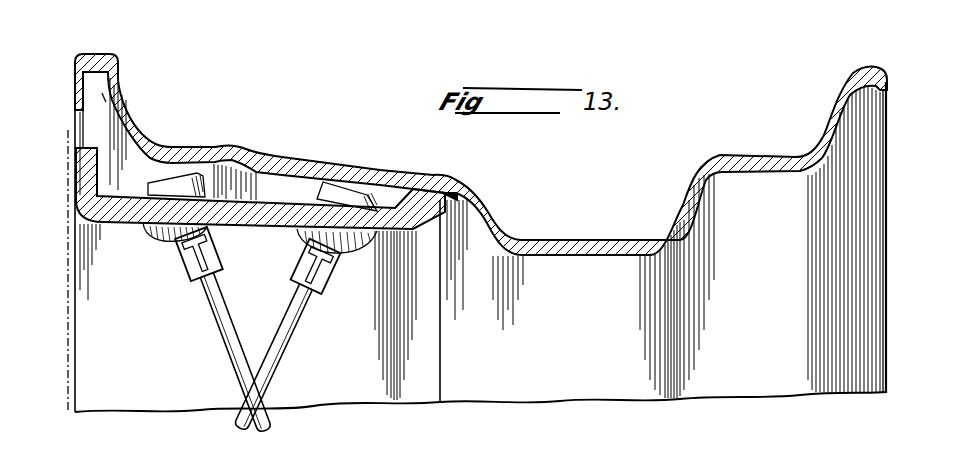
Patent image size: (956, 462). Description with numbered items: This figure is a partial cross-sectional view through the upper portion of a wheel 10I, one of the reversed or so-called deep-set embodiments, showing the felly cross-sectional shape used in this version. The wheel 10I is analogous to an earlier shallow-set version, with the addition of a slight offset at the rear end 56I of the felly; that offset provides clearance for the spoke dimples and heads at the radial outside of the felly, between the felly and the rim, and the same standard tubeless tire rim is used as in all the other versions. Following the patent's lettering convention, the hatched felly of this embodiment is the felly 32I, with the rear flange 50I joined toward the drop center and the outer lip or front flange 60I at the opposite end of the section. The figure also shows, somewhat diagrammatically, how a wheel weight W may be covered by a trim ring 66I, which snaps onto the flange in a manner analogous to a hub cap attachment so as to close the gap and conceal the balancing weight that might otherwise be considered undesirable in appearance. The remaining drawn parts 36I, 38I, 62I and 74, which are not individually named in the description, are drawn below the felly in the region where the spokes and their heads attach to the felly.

The wheel 10I is at (227, 132).
The trim ring 66I is at (68, 130).
The wheel weight W is at (123, 63).
The bead retaining block 60I is at (78, 173).
The lock ring insert 32I is at (267, 199).
The rear end 56I is at (388, 197).
The drop center well 50I is at (426, 195).
The rivet head 74 is at (264, 233).
The rivet head 62I is at (365, 257).
The bolt 36I is at (209, 299).
The bolt 38I is at (290, 333).